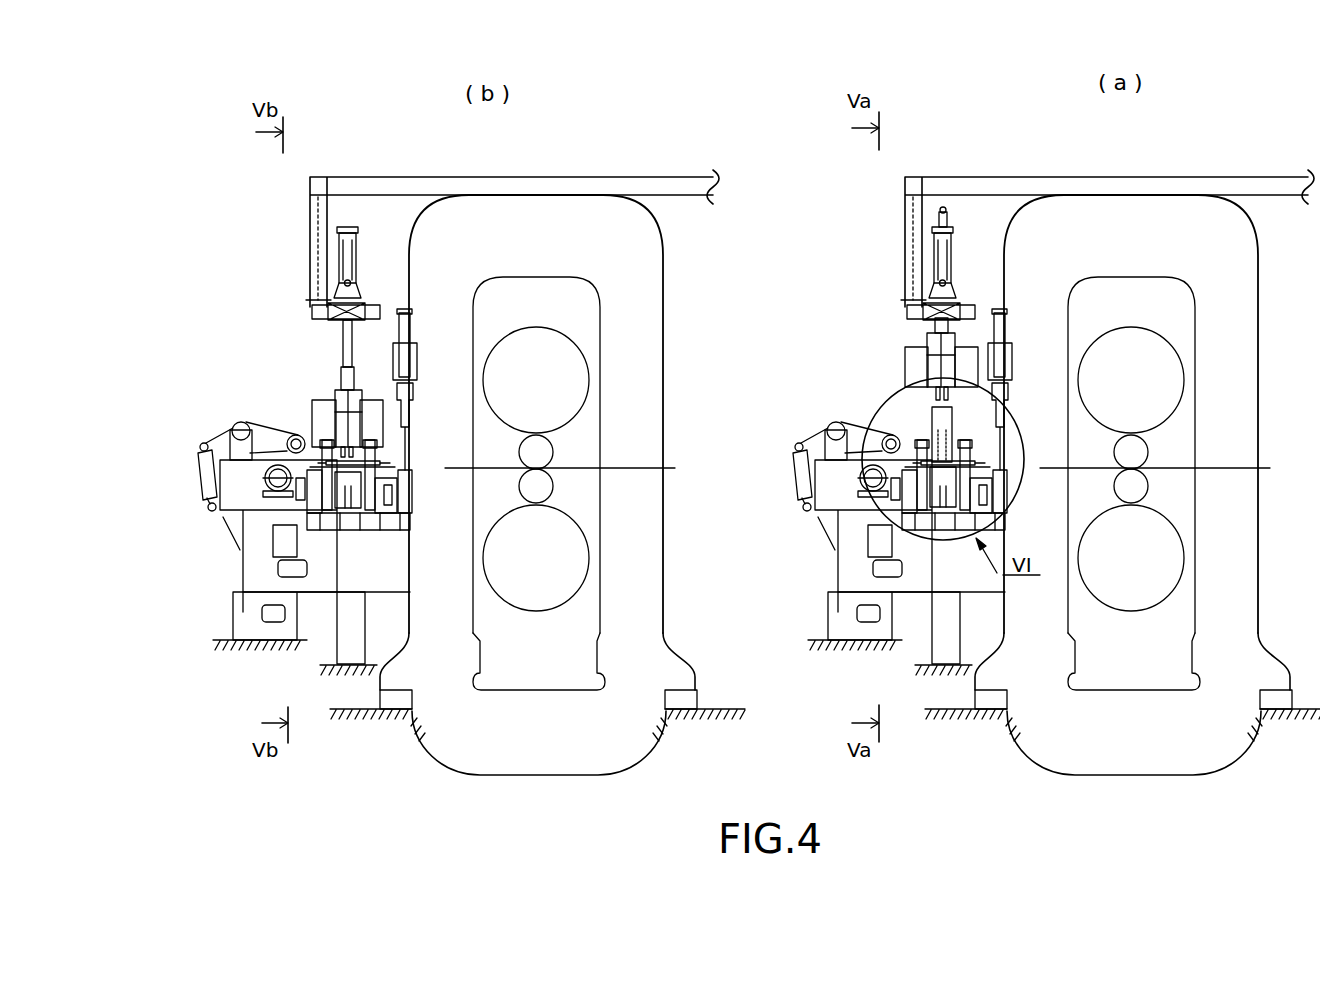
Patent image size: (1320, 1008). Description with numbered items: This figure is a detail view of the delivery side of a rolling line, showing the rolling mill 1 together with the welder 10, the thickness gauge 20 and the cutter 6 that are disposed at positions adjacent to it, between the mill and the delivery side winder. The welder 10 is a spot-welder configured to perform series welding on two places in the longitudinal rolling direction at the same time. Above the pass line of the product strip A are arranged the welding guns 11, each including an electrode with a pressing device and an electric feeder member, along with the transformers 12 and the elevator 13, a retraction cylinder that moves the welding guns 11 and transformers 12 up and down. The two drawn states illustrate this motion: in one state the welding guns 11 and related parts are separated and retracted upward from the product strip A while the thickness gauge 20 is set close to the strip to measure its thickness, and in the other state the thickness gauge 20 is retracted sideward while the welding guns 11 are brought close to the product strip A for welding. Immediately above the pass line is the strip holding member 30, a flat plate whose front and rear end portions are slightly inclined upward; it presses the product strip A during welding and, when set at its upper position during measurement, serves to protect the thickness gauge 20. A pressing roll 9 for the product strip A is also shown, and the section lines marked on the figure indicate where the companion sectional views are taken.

The rolling mill 1 is at (611, 249).
The cutter 6 is at (422, 401).
The pressing roll 9 is at (877, 472).
The welder 10 is at (669, 281).
The welding guns 11 is at (340, 428).
The transformers 12 is at (323, 400).
The elevator 13 is at (345, 256).
The thickness gauge 20 is at (352, 529).
The strip holding member 30 is at (378, 463).
The product strip A is at (644, 466).